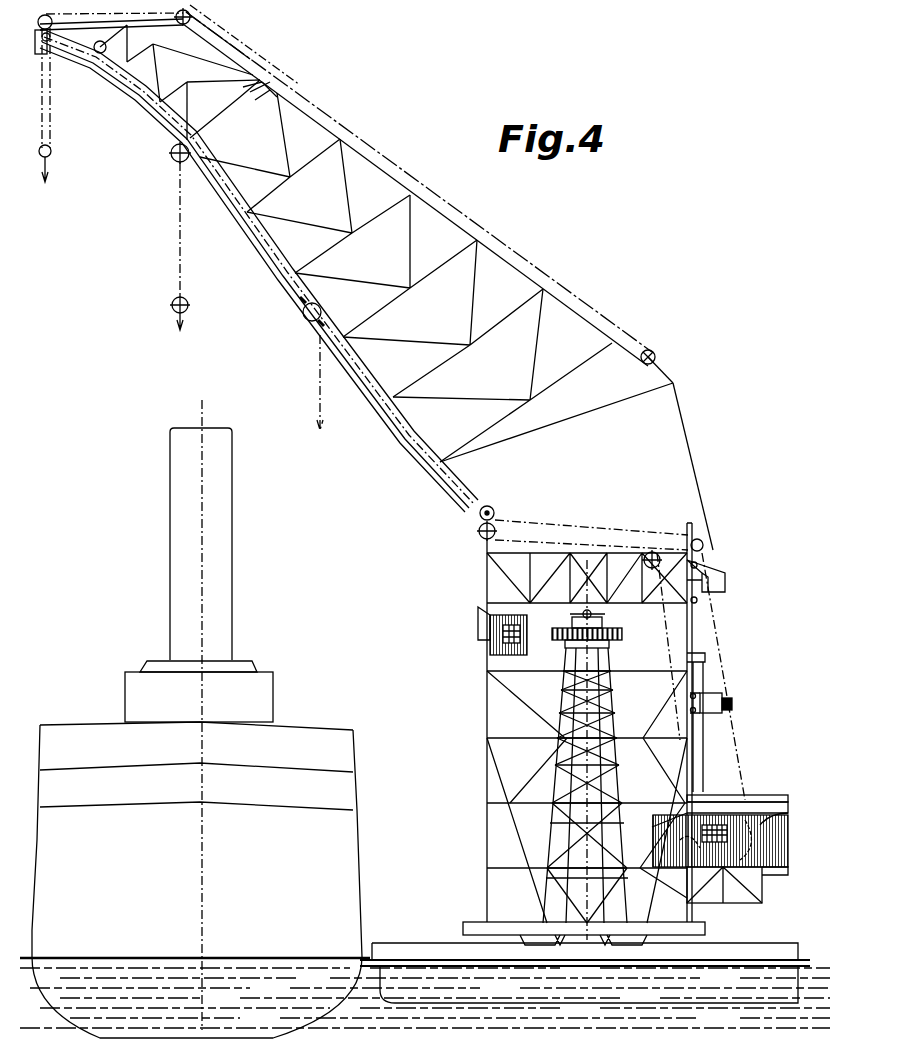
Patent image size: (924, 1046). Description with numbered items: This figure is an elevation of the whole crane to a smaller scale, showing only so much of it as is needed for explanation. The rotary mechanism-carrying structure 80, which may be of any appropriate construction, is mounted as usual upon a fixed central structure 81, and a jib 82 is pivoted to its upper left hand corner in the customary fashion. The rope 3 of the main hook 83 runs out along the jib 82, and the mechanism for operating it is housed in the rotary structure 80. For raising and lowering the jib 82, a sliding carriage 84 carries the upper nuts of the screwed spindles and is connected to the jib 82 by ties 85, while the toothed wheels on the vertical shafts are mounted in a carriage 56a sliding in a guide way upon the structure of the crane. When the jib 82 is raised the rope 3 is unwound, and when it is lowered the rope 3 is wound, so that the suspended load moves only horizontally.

The rope 3 is at (188, 258).
The main hook 83 is at (178, 318).
The jib 82 is at (400, 432).
The ties 85 is at (692, 458).
The sliding carriage 84 is at (735, 572).
The carriage 56a is at (730, 690).
The rotary mechanism-carrying structure 80 is at (487, 712).
The fixed central structure 81 is at (543, 787).